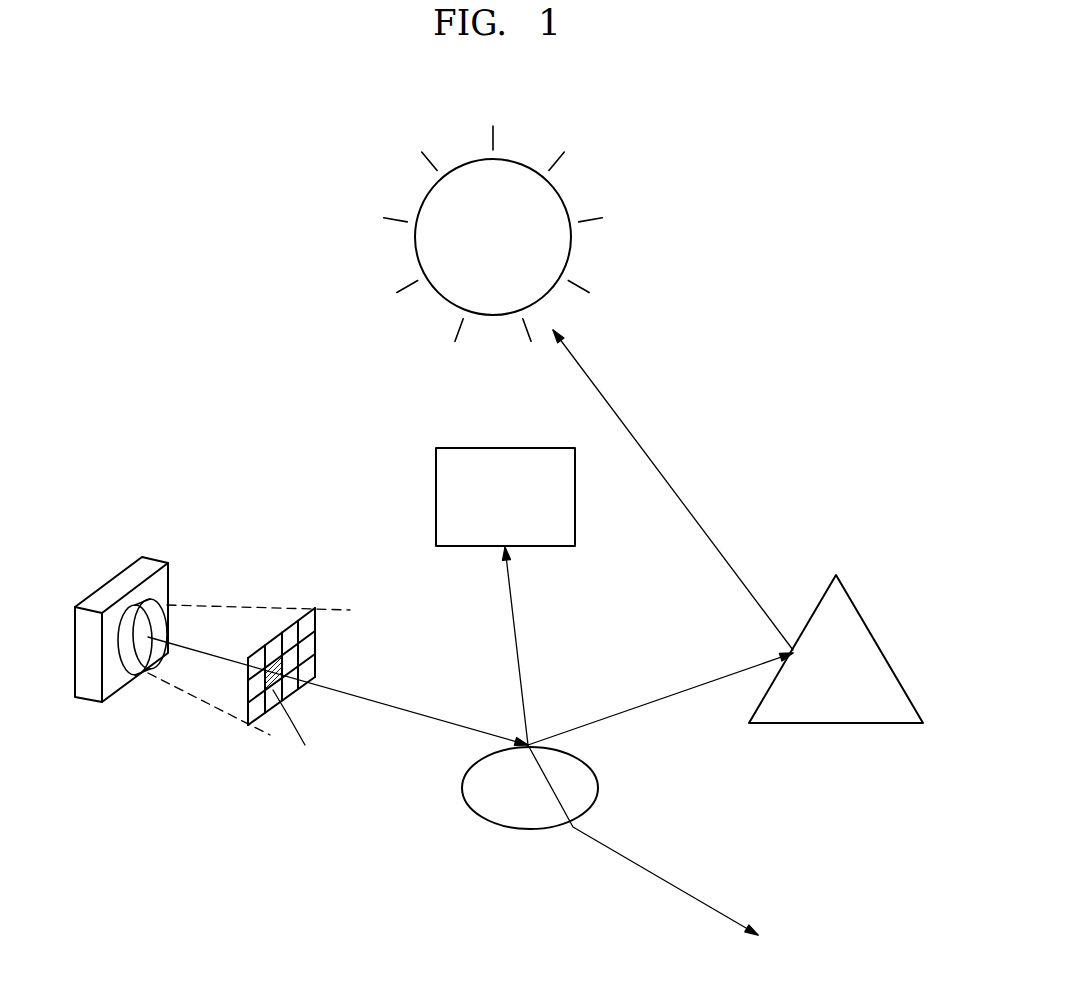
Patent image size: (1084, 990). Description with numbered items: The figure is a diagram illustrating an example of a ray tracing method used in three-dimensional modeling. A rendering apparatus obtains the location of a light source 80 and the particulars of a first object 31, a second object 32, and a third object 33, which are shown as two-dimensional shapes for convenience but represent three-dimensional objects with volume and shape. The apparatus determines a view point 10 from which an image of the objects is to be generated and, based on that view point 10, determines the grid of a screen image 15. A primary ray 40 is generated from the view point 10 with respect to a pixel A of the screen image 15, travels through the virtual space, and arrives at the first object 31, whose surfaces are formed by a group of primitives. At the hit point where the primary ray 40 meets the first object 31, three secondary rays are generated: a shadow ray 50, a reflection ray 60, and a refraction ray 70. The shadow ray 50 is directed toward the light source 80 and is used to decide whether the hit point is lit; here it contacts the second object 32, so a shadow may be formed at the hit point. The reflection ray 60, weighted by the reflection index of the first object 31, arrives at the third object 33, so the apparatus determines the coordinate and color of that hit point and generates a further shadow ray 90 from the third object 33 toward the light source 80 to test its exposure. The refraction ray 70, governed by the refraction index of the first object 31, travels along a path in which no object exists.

The view point 10 is at (150, 567).
The screen image 15 is at (283, 635).
The first object 31 is at (530, 788).
The second object 32 is at (505, 497).
The third object 33 is at (836, 649).
The primary ray 40 is at (383, 703).
The shadow ray 50 is at (519, 657).
The reflection ray 60 is at (645, 705).
The refraction ray 70 is at (663, 880).
The light source 80 is at (493, 233).
The shadow ray 90 is at (673, 490).